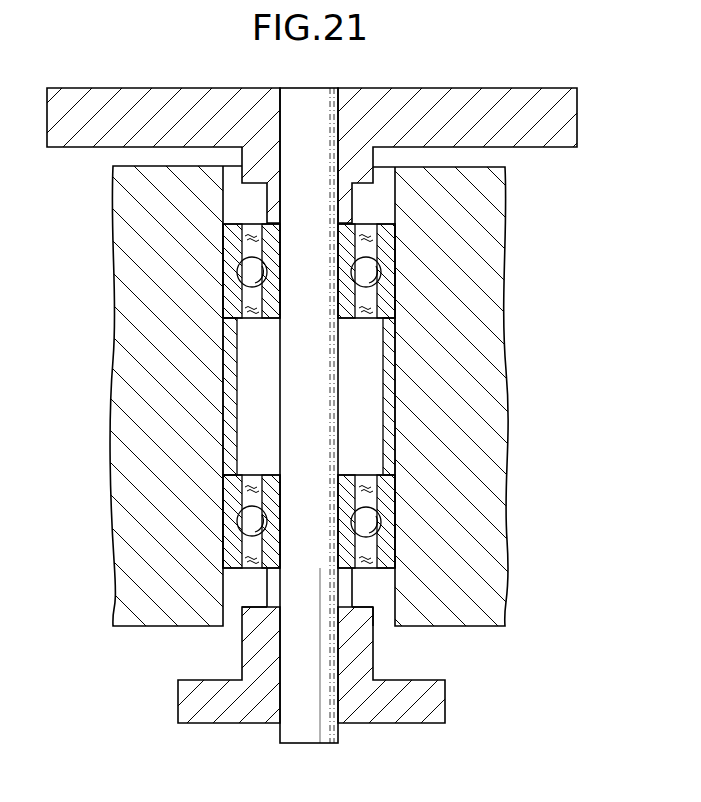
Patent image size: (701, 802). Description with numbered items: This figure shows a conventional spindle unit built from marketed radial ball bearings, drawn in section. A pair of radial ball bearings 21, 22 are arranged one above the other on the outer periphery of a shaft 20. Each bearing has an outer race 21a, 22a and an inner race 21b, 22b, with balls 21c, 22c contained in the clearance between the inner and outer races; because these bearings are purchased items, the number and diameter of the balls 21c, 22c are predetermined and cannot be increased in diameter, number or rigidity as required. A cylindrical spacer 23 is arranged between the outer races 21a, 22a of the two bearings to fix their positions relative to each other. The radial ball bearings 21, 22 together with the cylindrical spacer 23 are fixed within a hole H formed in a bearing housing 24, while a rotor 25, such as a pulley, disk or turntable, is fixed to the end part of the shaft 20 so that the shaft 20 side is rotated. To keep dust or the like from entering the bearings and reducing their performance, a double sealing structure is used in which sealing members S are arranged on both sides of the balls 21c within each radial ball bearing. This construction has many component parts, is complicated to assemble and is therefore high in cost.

The shaft 20 is at (283, 378).
The radial ball bearing 21 is at (355, 271).
The outer race 21a is at (389, 297).
The inner race 21b is at (367, 239).
The balls 21c is at (340, 272).
The radial ball bearing 22 is at (357, 521).
The outer race 22a is at (390, 551).
The inner race 22b is at (363, 492).
The balls 22c is at (380, 523).
The cylindrical spacer 23 is at (385, 403).
The bearing housing 24 is at (503, 376).
The rotor 25 is at (458, 91).
The sealing members S is at (368, 228).
The hole H is at (383, 607).